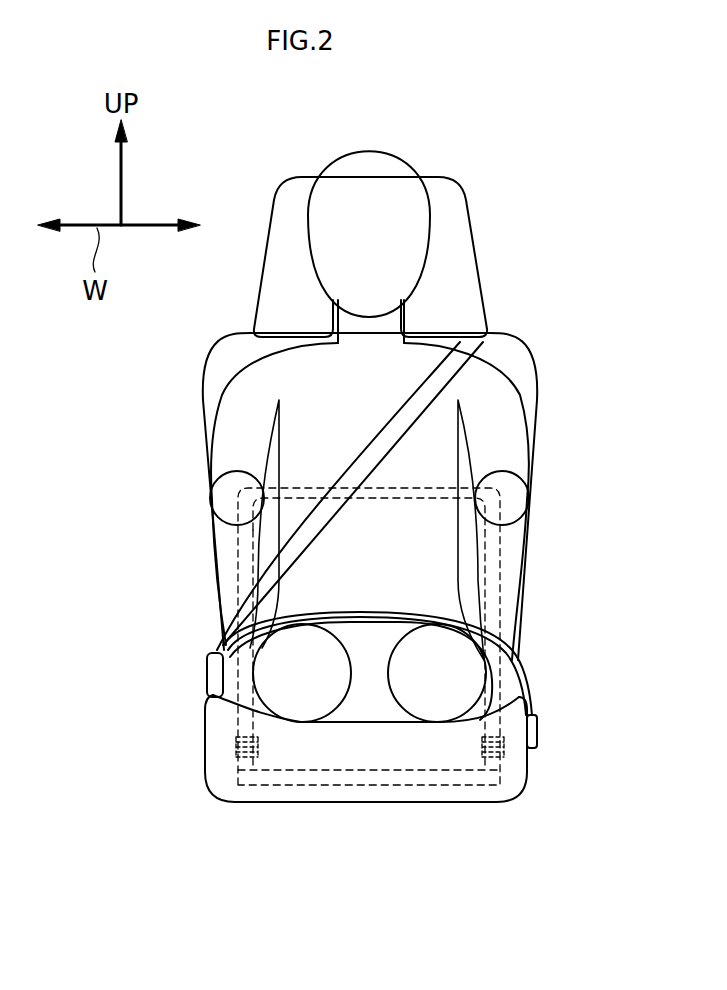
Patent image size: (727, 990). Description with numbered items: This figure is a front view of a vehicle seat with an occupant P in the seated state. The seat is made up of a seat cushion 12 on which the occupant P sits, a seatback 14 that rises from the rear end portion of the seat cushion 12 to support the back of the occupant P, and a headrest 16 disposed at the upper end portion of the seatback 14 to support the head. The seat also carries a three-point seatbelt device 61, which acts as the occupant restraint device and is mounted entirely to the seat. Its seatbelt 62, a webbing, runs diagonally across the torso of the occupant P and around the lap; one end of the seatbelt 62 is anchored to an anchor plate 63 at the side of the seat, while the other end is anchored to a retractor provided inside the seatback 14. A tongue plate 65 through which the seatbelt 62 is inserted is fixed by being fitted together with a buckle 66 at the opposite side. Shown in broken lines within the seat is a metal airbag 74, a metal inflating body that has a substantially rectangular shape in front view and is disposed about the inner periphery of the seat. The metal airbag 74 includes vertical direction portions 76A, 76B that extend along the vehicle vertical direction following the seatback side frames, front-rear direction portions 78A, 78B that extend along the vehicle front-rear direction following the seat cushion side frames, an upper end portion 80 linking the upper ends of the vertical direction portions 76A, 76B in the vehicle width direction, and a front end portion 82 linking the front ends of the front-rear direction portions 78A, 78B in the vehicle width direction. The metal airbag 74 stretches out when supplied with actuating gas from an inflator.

The seat cushion 12 is at (387, 802).
The seatback 14 is at (528, 527).
The headrest 16 is at (477, 238).
The seatbelt device 61 is at (378, 435).
The seatbelt (webbing) 62 is at (355, 463).
The anchor plate 63 is at (545, 722).
The tongue plate 65 is at (217, 647).
The buckle 66 is at (212, 673).
The metal airbag 74 is at (498, 608).
The vertical direction portion 76A is at (237, 545).
The vertical direction portion 76B is at (498, 572).
The front-rear direction portion 78A is at (236, 762).
The front-rear direction portion 78B is at (504, 762).
The upper end portion 80 is at (397, 498).
The front end portion 82 is at (297, 785).
The occupant P is at (503, 413).